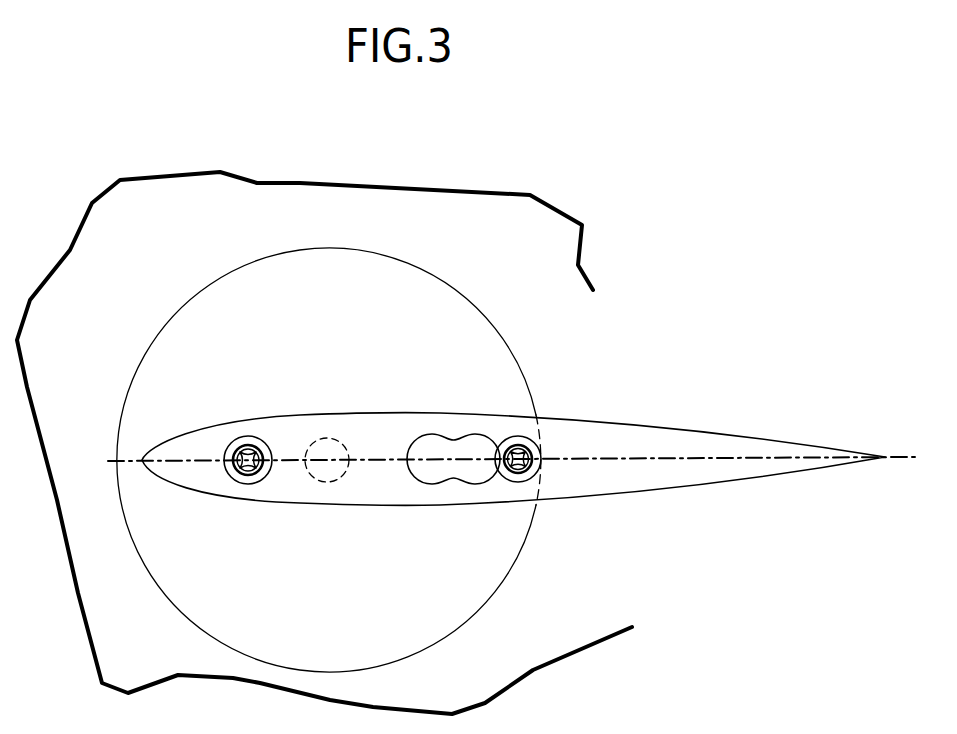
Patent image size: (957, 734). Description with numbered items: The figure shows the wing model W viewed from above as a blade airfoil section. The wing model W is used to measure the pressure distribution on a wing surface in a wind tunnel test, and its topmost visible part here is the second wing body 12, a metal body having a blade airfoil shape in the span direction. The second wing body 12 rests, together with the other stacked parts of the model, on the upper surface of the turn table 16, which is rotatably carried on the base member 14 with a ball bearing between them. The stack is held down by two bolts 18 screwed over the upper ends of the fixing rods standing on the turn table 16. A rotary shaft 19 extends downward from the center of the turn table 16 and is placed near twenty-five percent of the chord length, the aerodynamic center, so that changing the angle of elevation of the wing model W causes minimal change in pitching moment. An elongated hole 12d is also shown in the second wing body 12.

The second wing body 12 is at (325, 506).
The elongated hole 12d is at (428, 478).
The base member 14 is at (489, 263).
The turn table 16 is at (336, 330).
The bolt 18 is at (247, 452).
The rotary shaft 19 is at (327, 438).
The wing model W is at (378, 414).